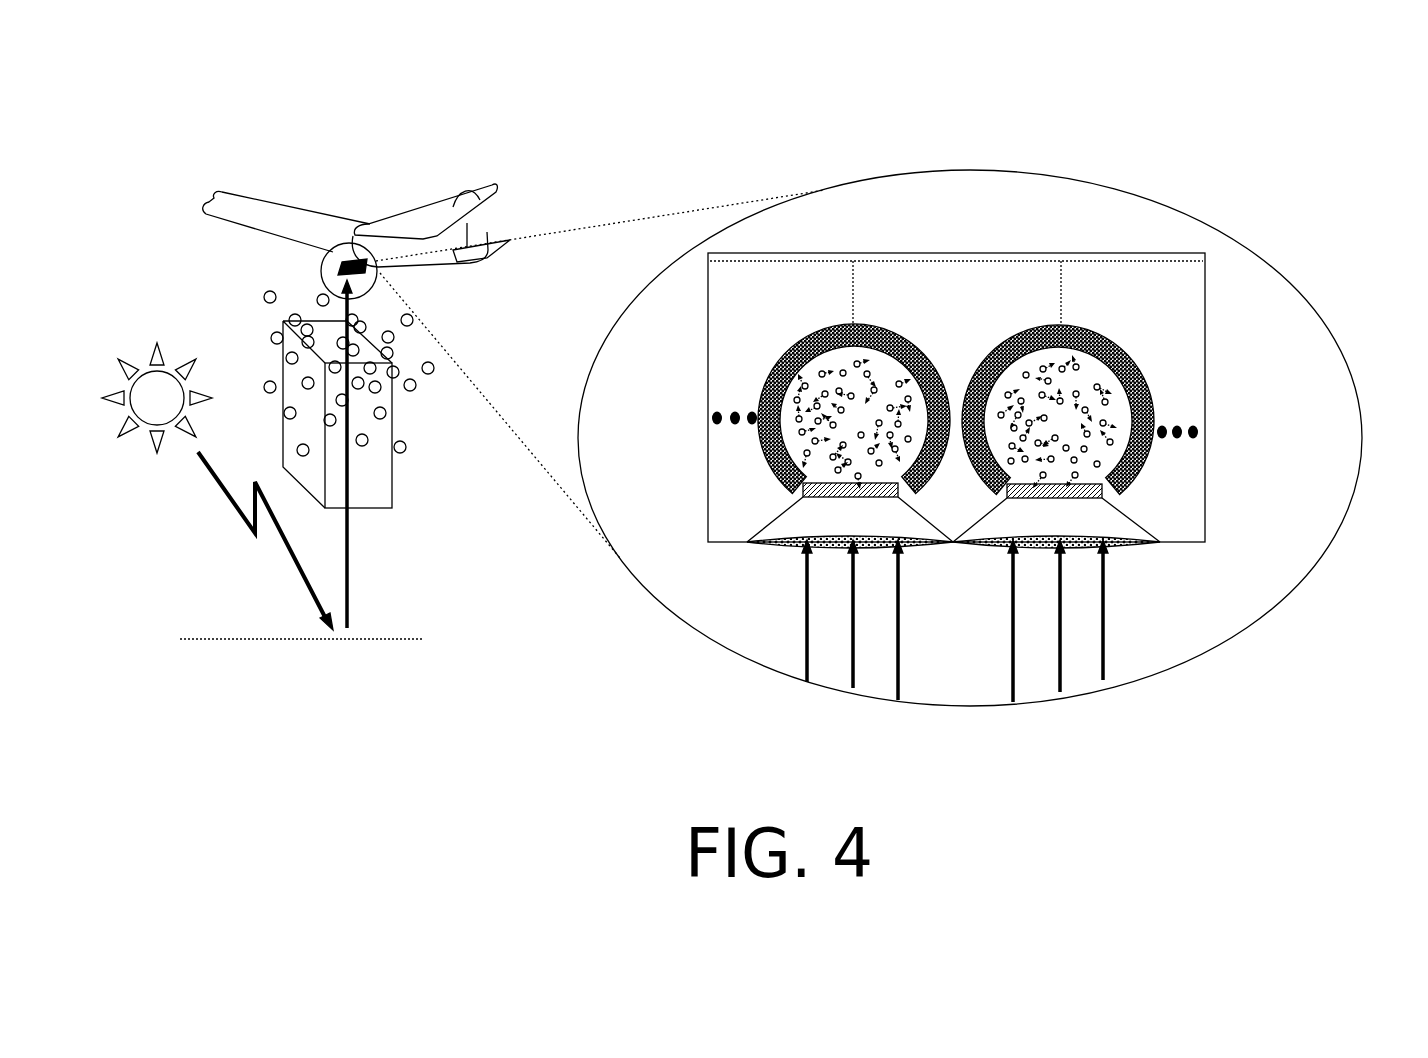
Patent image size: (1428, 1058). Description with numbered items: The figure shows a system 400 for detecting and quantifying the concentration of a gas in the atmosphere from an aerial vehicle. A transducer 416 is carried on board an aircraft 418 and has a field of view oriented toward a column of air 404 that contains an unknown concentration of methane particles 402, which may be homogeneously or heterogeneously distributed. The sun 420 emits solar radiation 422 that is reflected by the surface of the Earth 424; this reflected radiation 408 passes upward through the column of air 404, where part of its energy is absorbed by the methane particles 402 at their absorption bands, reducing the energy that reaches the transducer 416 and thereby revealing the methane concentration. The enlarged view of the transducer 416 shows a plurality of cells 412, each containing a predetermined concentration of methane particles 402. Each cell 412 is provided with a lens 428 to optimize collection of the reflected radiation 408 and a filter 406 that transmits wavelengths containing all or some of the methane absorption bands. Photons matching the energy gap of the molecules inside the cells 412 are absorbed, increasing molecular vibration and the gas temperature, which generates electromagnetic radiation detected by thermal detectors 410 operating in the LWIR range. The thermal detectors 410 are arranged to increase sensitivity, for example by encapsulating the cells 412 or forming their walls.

The system 400 is at (155, 148).
The methane particles 402 is at (380, 396).
The column of air 404 is at (397, 481).
The filter 406 is at (1108, 485).
The reflected radiation 408 is at (352, 549).
The thermal detectors 410 is at (812, 338).
The cells 412 is at (780, 458).
The transducer 416 is at (337, 267).
The aircraft 418 is at (588, 225).
The sun 420 is at (146, 381).
The solar radiation 422 is at (247, 541).
The surface of the Earth 424 is at (301, 622).
The lens 428 is at (1130, 540).